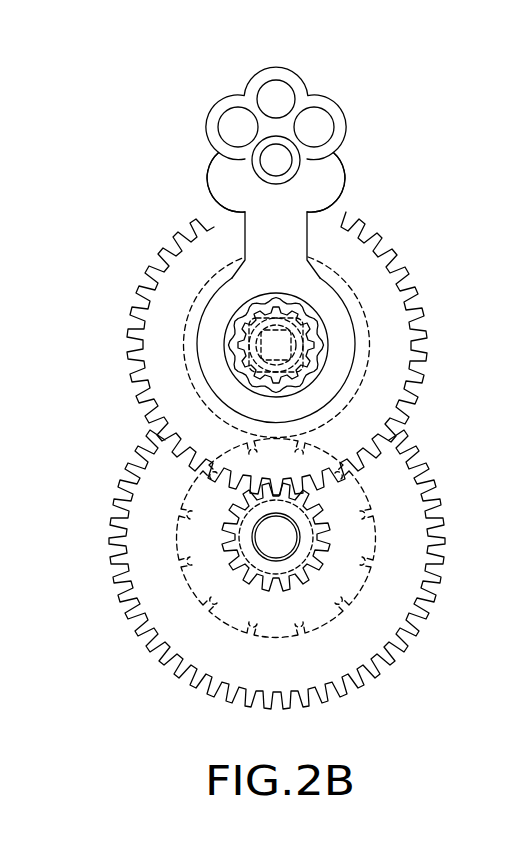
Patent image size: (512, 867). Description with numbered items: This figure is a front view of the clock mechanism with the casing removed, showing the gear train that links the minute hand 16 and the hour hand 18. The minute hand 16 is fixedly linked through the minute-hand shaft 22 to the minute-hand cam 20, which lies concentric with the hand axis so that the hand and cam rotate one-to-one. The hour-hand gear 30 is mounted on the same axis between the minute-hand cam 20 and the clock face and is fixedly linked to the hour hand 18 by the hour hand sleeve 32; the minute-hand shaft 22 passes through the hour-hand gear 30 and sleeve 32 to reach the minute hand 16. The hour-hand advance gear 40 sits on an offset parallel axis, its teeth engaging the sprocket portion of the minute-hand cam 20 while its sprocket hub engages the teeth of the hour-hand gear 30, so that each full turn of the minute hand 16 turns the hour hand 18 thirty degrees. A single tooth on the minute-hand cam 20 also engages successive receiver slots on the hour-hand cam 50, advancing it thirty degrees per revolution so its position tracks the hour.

The minute hand 16 is at (292, 73).
The hour hand 18 is at (345, 172).
The minute-hand cam 20 is at (183, 343).
The minute-hand shaft 22 is at (313, 313).
The hour hand sleeve 32 is at (325, 398).
The hour-hand gear 30 is at (132, 393).
The hour-hand advance gear 40 is at (118, 493).
The hour-hand cam 50 is at (178, 535).